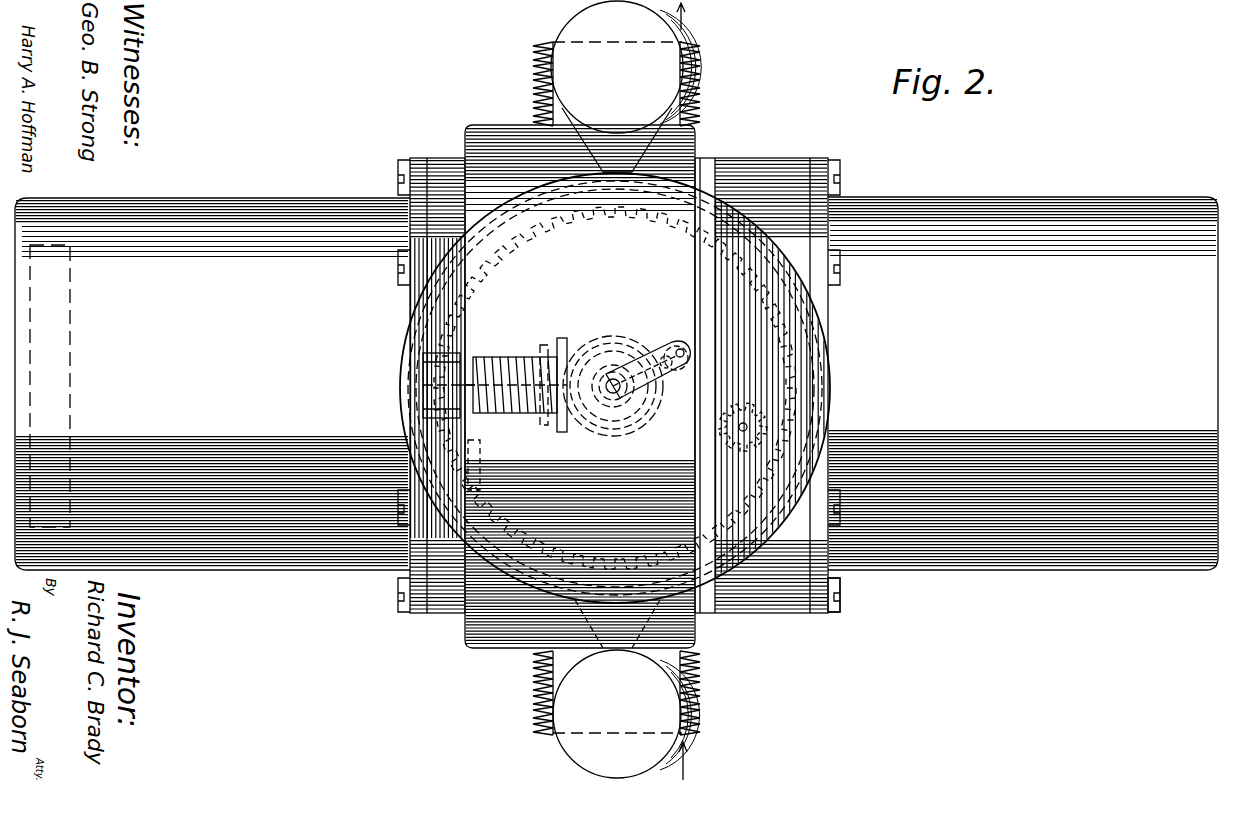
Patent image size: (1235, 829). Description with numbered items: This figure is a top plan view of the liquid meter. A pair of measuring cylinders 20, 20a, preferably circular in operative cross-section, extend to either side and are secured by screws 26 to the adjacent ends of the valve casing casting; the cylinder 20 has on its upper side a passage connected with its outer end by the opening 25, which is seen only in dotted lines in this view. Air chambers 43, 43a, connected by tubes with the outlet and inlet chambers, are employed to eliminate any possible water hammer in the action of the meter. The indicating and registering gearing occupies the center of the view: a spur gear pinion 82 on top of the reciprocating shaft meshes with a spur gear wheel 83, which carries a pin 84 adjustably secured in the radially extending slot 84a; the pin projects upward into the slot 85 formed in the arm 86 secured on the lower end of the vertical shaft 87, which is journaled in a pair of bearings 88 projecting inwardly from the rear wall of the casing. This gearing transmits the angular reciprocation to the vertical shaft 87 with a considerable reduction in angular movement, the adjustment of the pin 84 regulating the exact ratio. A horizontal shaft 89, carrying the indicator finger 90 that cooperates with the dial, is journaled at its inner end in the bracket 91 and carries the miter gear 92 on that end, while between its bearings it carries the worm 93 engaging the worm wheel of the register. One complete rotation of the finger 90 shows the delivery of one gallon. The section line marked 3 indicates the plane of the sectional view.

The measuring cylinder 20 is at (272, 192).
The measuring cylinder 20a is at (1005, 192).
The opening 25 is at (58, 311).
The screw 26 is at (845, 604).
The air chamber 43 is at (617, 86).
The air chamber 43a is at (616, 690).
The spur gear pinion 82 is at (749, 455).
The spur gear wheel 83 is at (660, 345).
The pin 84 is at (650, 358).
The radially extending slot 84a is at (661, 332).
The slot 85 is at (676, 348).
The arm 86 is at (613, 345).
The vertical shaft 87 is at (605, 347).
The bearing 88 is at (688, 410).
The horizontal shaft 89 is at (422, 376).
The indicator finger 90 is at (470, 480).
The bracket 91 is at (553, 442).
The miter gear 92 is at (572, 345).
The worm 93 is at (552, 366).
The section line 3- 3 is at (395, 384).